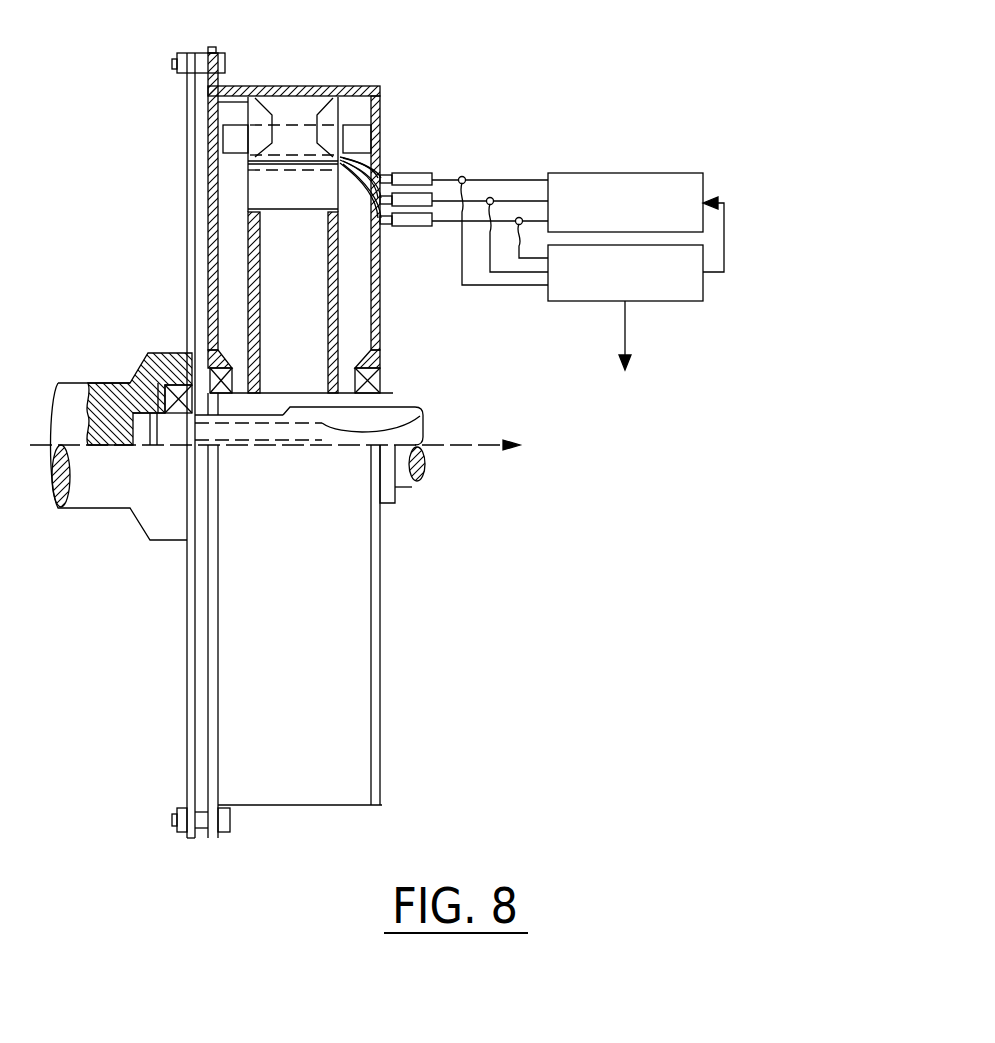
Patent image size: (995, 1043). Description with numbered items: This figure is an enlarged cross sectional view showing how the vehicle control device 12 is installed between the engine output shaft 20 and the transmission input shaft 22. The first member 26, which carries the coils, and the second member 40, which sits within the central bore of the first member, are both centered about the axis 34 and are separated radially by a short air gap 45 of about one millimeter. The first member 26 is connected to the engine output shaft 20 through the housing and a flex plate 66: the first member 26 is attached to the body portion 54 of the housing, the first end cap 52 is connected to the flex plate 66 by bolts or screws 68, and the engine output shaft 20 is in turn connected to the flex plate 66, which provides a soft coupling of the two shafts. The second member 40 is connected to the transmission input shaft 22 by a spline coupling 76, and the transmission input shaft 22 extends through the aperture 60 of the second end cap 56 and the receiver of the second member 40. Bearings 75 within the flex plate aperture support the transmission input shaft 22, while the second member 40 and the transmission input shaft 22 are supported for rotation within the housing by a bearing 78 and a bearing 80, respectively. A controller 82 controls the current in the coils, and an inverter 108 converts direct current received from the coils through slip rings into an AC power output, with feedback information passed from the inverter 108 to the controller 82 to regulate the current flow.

The vehicle control device 12 is at (402, 91).
The engine output shaft 20 is at (57, 490).
The transmission input shaft 22 is at (423, 482).
The first member 26 is at (248, 104).
The axis 34 is at (516, 452).
The second member 40 is at (342, 312).
The air gap 45 is at (250, 163).
The first end cap 52 is at (218, 718).
The body portion 54 is at (255, 806).
The second end cap 56 is at (381, 707).
The aperture 60 is at (398, 474).
The flex plate 66 is at (187, 726).
The bolts or screws 68 is at (172, 826).
The bearings 75 is at (140, 373).
The spline coupling 76 is at (322, 423).
The bearing 78 is at (228, 366).
The bearing 80 is at (380, 366).
The controller 82 is at (647, 173).
The inverter 108 is at (657, 302).